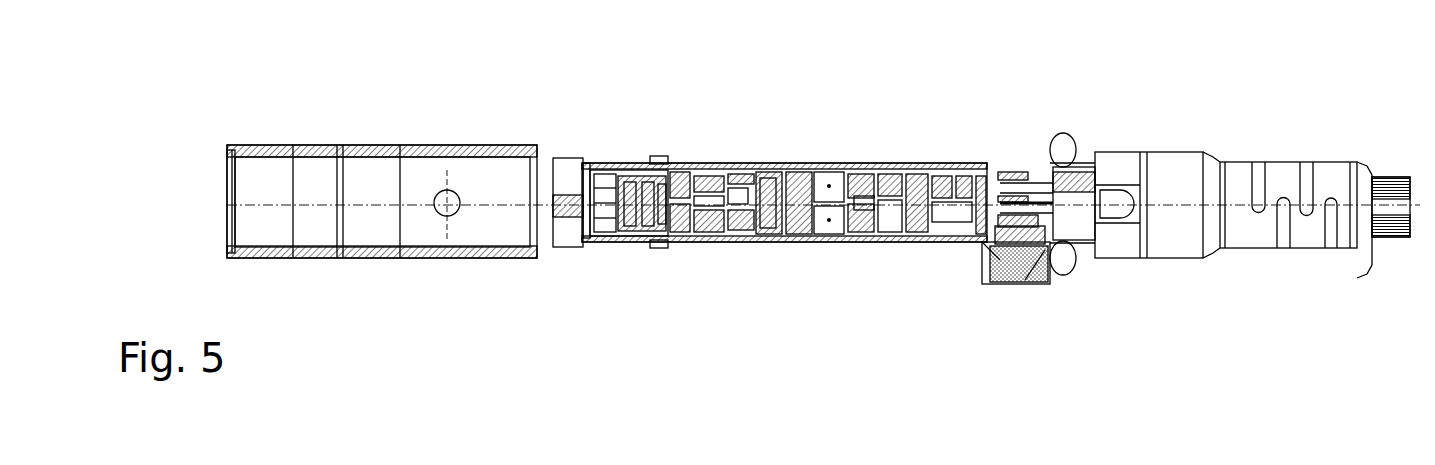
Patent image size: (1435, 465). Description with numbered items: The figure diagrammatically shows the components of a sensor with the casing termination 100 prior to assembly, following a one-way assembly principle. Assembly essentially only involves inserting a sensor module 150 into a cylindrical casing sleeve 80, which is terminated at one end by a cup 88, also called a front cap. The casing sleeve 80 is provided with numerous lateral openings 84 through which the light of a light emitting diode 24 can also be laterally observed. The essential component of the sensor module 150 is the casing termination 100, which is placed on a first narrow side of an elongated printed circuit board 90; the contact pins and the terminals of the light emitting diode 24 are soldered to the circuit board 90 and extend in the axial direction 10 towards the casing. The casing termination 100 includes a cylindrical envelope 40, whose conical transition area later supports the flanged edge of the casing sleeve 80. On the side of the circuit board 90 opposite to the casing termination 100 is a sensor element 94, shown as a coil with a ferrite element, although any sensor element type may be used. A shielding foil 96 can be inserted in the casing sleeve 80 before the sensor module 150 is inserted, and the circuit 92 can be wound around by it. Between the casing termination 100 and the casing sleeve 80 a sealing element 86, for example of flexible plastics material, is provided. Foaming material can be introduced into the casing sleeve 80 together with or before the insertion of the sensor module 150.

The axial direction 10 is at (1170, 205).
The light emitting diode 24 is at (1118, 198).
The envelope 40 is at (1288, 173).
The casing sleeve 80 is at (388, 155).
The lateral openings 84 is at (450, 205).
The sealing element 86 is at (1083, 168).
The cup 88 is at (217, 139).
The printed circuit board 90 is at (735, 170).
The circuit 92 is at (866, 200).
The sensor element 94 is at (570, 168).
The shielding foil 96 is at (1020, 263).
The casing termination 100 is at (1333, 293).
The sensor module 150 is at (832, 263).